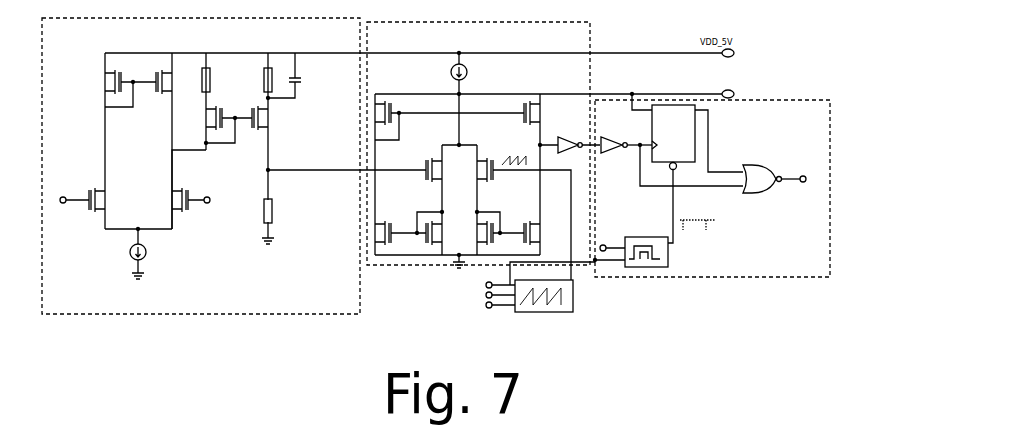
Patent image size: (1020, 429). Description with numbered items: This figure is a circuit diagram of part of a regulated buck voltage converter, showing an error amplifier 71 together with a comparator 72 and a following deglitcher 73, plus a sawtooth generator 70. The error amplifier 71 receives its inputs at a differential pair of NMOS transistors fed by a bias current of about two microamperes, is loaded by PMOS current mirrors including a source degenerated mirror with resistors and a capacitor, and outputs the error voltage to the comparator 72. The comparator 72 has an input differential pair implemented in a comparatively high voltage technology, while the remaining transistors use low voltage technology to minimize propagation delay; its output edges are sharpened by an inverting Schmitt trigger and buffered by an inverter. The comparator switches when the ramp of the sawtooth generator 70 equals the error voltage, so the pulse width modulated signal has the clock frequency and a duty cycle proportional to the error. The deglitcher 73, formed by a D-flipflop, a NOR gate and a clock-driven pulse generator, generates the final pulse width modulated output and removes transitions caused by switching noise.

The sawtooth generator 70 is at (576, 302).
The error amplifier 71 is at (128, 314).
The comparator 72 is at (591, 34).
The deglitcher 73 is at (693, 273).